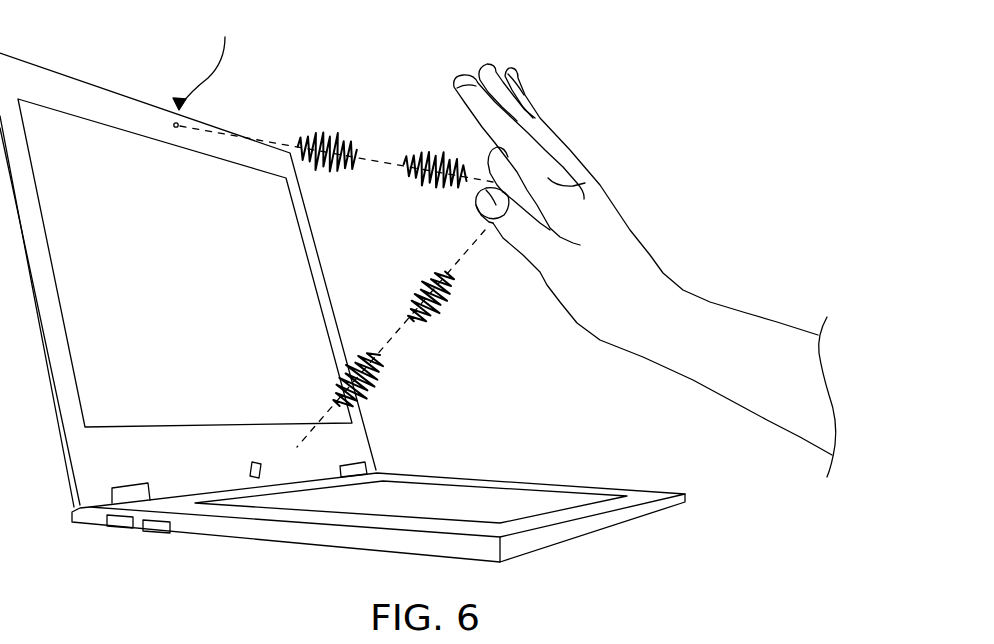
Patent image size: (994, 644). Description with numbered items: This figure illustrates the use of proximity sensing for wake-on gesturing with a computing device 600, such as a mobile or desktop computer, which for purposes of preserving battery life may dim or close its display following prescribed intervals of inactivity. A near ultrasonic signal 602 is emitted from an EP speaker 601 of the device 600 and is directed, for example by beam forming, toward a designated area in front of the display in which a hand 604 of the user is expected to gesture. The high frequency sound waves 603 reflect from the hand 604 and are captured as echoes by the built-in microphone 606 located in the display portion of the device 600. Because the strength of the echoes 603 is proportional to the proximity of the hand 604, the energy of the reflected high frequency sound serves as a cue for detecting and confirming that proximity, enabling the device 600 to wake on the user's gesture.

The computing device 600 is at (687, 502).
The EP speaker 601 is at (303, 445).
The near ultrasonic signal 602 is at (378, 388).
The high frequency sound waves 603 is at (332, 128).
The hand 604 is at (585, 183).
The built-in microphone 606 is at (186, 122).